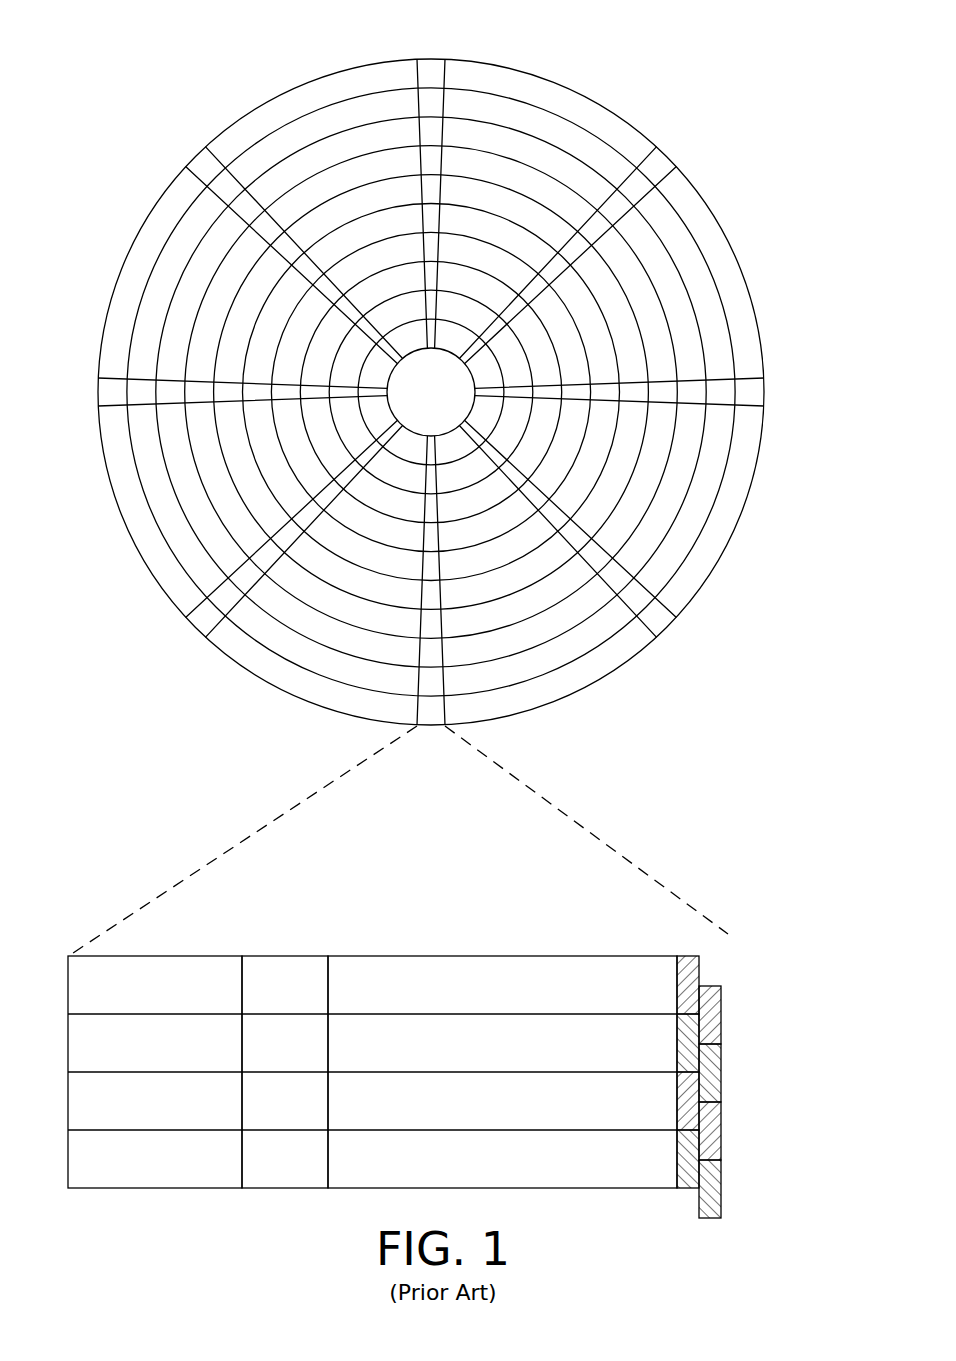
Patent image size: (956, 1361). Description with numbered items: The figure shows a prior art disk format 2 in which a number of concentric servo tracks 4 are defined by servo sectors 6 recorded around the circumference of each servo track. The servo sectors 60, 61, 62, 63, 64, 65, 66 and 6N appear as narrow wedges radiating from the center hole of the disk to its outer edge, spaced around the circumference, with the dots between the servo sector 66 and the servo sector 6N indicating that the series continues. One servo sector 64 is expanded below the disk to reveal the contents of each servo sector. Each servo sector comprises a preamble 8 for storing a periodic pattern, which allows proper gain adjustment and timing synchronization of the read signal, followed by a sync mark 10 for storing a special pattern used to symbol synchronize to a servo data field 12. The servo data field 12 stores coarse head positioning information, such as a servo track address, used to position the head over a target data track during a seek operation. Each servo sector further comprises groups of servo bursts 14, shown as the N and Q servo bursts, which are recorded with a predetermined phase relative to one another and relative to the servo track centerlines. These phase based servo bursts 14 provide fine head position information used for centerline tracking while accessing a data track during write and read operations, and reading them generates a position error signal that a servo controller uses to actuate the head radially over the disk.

The disk format 2 is at (186, 62).
The servo track 4 is at (567, 108).
The servo sectors 6 is at (432, 404).
The servo sector 60 is at (431, 66).
The servo sector 61 is at (658, 165).
The servo sector 62 is at (755, 393).
The servo sector 63 is at (657, 620).
The servo sector 64 is at (283, 800).
The servo sector 65 is at (200, 622).
The servo sector 66 is at (98, 392).
The servo sector 6N is at (203, 163).
The preamble 8 is at (164, 956).
The sync mark 10 is at (288, 956).
The servo data field 12 is at (487, 956).
The servo bursts 14 is at (715, 956).